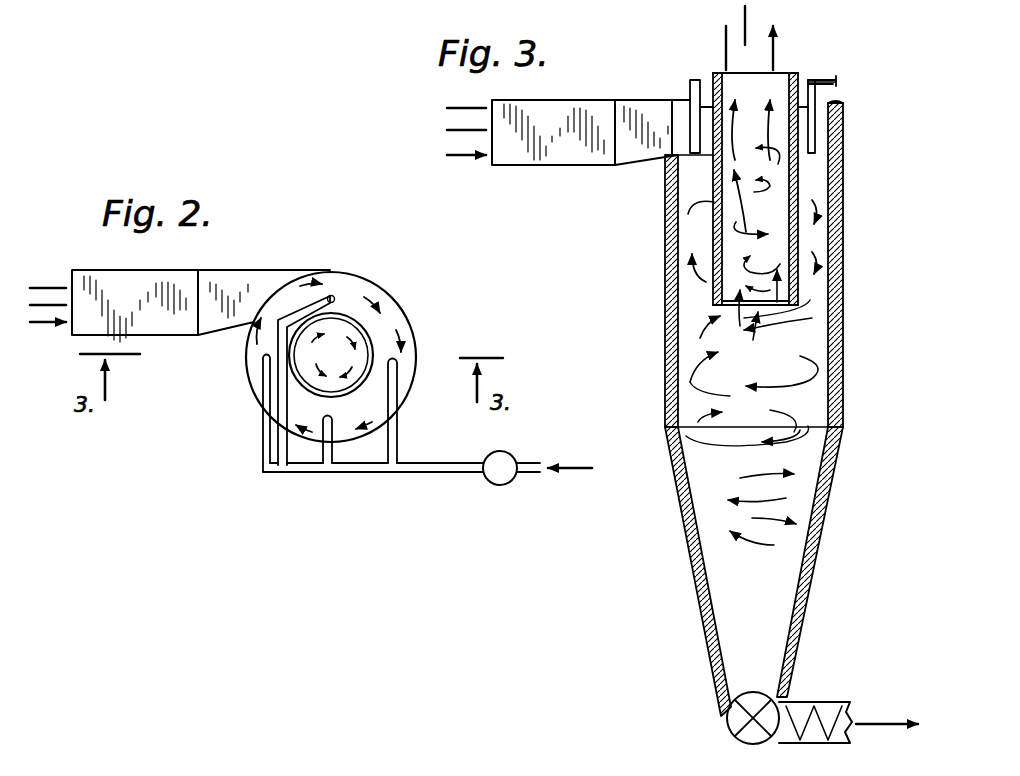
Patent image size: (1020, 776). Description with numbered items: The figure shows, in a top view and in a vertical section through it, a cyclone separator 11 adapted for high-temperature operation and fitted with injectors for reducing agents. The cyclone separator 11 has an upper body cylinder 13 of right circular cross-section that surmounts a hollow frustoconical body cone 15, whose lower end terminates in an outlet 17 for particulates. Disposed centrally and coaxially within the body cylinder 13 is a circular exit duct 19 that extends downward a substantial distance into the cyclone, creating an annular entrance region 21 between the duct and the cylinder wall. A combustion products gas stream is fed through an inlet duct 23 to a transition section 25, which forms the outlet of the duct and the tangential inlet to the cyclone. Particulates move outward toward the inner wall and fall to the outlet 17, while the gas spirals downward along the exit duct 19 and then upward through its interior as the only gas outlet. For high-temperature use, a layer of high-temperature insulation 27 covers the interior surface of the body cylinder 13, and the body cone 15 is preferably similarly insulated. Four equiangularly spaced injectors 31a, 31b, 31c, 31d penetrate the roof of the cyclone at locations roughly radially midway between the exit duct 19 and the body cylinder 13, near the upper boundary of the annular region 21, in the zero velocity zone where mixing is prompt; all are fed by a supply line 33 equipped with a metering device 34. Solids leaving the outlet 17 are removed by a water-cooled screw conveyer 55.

In FIG. 2, the cyclone separator 11 is at (404, 272).
In FIG. 3, the cyclone separator 11 is at (858, 152).
In FIG. 3, the upper body cylinder 13 is at (660, 304).
In FIG. 3, the body cone 15 is at (700, 560).
In FIG. 3, the outlet 17 is at (734, 722).
In FIG. 2, the exit duct 19 is at (344, 312).
In FIG. 3, the exit duct 19 is at (714, 72).
In FIG. 2, the annular entrance region 21 is at (292, 300).
In FIG. 3, the annular entrance region 21 is at (684, 200).
In FIG. 2, the inlet duct 23 is at (108, 280).
In FIG. 3, the inlet duct 23 is at (534, 150).
In FIG. 2, the transition section 25 is at (232, 284).
In FIG. 3, the transition section 25 is at (624, 126).
In FIG. 3, the high-temperature insulation 27 is at (830, 384).
In FIG. 2, the injector 31a is at (334, 294).
In FIG. 3, the injector 31a is at (690, 80).
In FIG. 2, the injector 31b is at (410, 360).
In FIG. 3, the injector 31b is at (810, 68).
In FIG. 2, the injector 31c is at (324, 422).
In FIG. 2, the injector 31d is at (260, 358).
In FIG. 2, the supply line 33 is at (412, 474).
In FIG. 3, the supply line 33 is at (836, 76).
In FIG. 2, the metering device 34 is at (498, 488).
In FIG. 3, the screw conveyer 55 is at (820, 704).